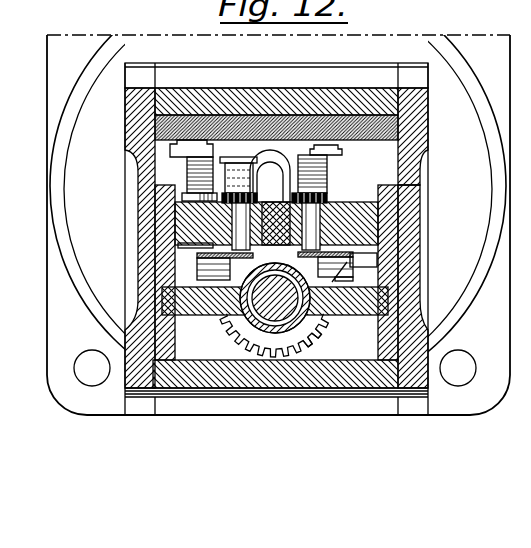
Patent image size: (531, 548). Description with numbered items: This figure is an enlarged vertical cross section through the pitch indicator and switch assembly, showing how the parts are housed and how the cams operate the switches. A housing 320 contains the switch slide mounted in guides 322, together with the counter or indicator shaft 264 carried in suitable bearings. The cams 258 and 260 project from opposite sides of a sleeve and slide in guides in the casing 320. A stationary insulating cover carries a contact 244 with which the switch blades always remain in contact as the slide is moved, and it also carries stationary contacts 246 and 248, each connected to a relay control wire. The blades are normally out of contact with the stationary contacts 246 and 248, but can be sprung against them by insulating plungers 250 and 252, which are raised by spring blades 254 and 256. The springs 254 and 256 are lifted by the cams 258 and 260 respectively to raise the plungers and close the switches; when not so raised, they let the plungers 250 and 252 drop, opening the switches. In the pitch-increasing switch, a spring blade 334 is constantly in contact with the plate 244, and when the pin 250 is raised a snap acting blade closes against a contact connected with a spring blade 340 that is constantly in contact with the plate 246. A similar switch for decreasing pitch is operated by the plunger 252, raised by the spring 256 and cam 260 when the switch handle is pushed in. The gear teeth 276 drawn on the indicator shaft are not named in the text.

The contact 244 is at (309, 115).
The stationary contact 246 is at (412, 118).
The stationary contact 248 is at (194, 132).
The insulating plunger 250 is at (327, 203).
The insulating plunger 252 is at (237, 222).
The spring blade 254 is at (395, 243).
The spring blade 256 is at (213, 255).
The cam 258 is at (324, 338).
The cam 260 is at (240, 305).
The indicator shaft 264 is at (240, 338).
The gear tooth 276 is at (308, 344).
The housing 320 is at (412, 188).
The guides 322 is at (397, 221).
The spring blade 334 is at (323, 177).
The spring blade 340 is at (192, 168).